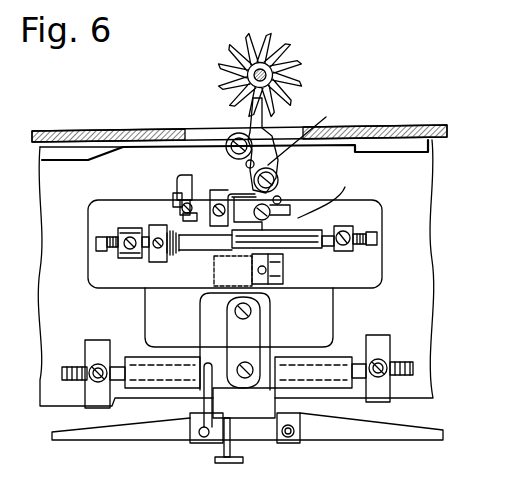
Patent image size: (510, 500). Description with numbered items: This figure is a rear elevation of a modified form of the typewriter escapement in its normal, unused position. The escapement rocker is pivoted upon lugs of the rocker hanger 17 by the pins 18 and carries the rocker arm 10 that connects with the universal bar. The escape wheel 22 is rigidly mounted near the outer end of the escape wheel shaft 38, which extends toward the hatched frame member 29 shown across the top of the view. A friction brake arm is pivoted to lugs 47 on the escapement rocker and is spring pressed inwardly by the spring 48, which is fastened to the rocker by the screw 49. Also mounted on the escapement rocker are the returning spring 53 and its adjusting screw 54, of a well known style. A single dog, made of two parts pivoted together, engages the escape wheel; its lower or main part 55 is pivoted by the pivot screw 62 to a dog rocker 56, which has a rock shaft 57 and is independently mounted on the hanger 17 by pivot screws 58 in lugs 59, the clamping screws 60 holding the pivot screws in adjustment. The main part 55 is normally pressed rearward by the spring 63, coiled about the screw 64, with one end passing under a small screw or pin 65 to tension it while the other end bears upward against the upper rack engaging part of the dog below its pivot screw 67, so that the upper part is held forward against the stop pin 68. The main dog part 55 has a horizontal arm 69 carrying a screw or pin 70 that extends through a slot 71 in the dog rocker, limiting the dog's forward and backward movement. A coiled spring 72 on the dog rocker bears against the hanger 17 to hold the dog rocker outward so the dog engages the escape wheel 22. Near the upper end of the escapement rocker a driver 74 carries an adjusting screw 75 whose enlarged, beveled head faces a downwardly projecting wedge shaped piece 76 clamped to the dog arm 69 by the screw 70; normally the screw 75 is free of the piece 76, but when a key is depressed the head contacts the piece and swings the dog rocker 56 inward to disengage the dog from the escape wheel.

The rocker arm 10 is at (414, 433).
The rocker hanger 17 is at (428, 252).
The pins 18 is at (402, 361).
The escape wheel 22 is at (285, 57).
The hatched bar 29 is at (371, 125).
The escape wheel shaft 38 is at (254, 74).
The lugs 47 is at (283, 283).
The spring 48 is at (237, 328).
The screw 49 is at (247, 381).
The returning spring 53 is at (204, 403).
The adjusting screw 54 is at (219, 463).
The lower or main part of the dog 55 is at (308, 135).
The dog rocker 56 is at (331, 195).
The rock shaft 57 is at (318, 222).
The pivot screws 58 is at (104, 236).
The lugs 59 is at (330, 253).
The clamping screws 60 is at (131, 252).
The pivot screw 62 is at (278, 183).
The spring 63 is at (261, 214).
The screw 64 is at (378, 201).
The screw or pin 65 is at (290, 203).
The pivot screw 67 is at (231, 137).
The stop pin 68 is at (235, 163).
The horizontal arm 69 is at (263, 125).
The screw or pin 70 is at (182, 193).
The slot 71 is at (180, 178).
The coiled spring 72 is at (172, 257).
The driver 74 is at (208, 202).
The adjusting screw 75 is at (182, 208).
The wedge shaped piece 76 is at (190, 220).